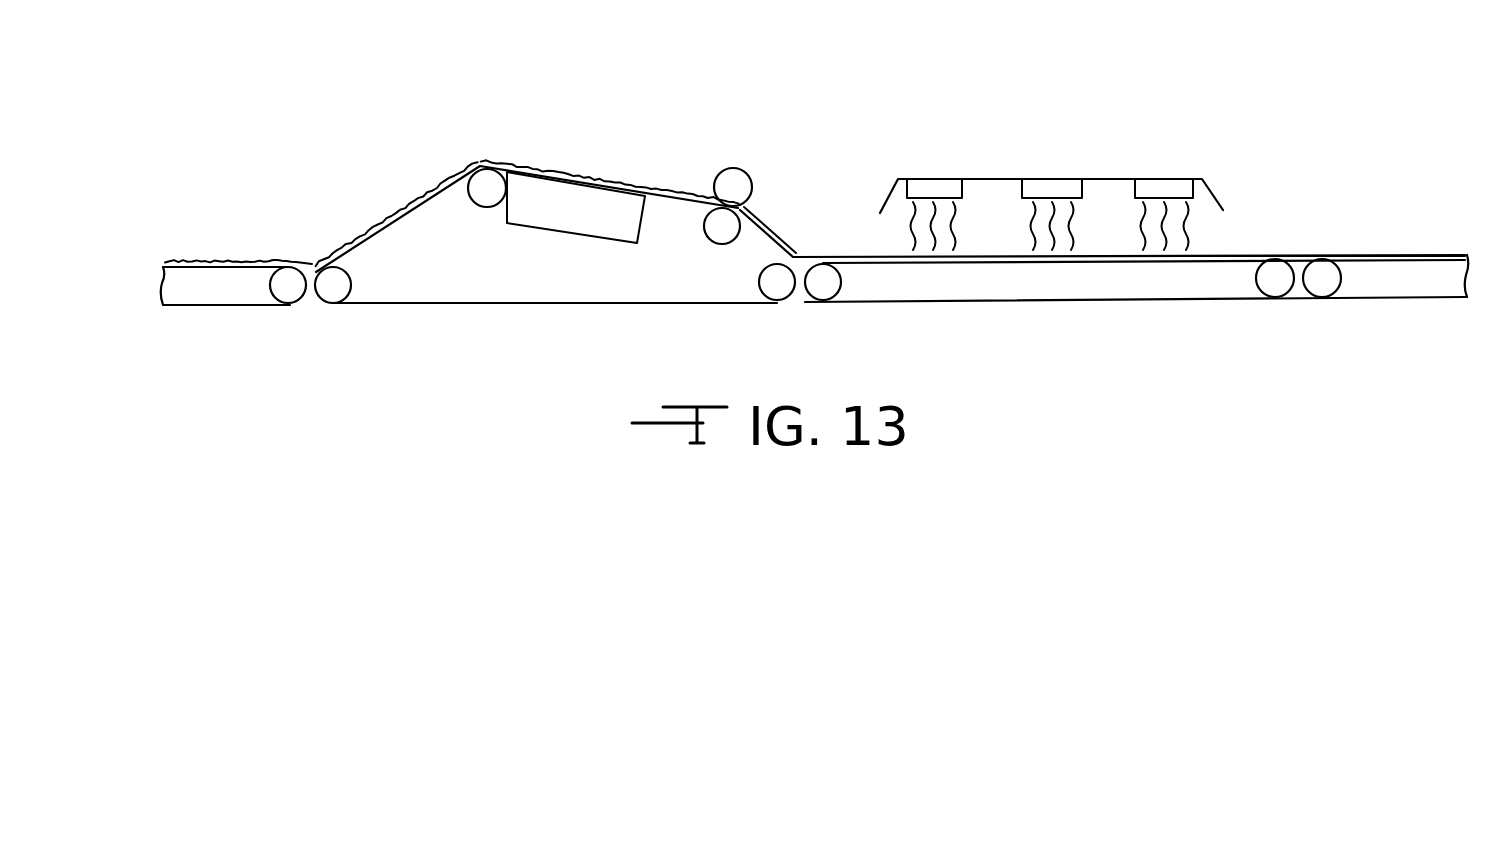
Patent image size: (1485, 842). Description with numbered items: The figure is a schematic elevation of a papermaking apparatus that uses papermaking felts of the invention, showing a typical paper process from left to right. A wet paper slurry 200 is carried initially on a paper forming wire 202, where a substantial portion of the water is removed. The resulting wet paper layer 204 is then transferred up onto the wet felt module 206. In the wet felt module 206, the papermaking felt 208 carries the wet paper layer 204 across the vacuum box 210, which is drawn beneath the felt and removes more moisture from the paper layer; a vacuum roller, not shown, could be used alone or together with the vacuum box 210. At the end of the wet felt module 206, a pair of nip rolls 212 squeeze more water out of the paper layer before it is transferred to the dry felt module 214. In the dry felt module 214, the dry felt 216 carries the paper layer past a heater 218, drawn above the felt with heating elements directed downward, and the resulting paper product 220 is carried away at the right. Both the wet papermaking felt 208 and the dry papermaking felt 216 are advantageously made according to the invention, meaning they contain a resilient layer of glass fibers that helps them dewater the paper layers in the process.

The wet paper slurry 200 is at (230, 262).
The paper forming wire 202 is at (238, 307).
The wet paper layer 204 is at (408, 205).
The wet felt module 206 is at (513, 135).
The papermaking felt 208 is at (618, 305).
The vacuum box 210 is at (550, 230).
The nip rolls 212 is at (752, 168).
The dry felt module 214 is at (1018, 322).
The dry felt 216 is at (1137, 300).
The heater 218 is at (993, 177).
The paper product 220 is at (1372, 253).